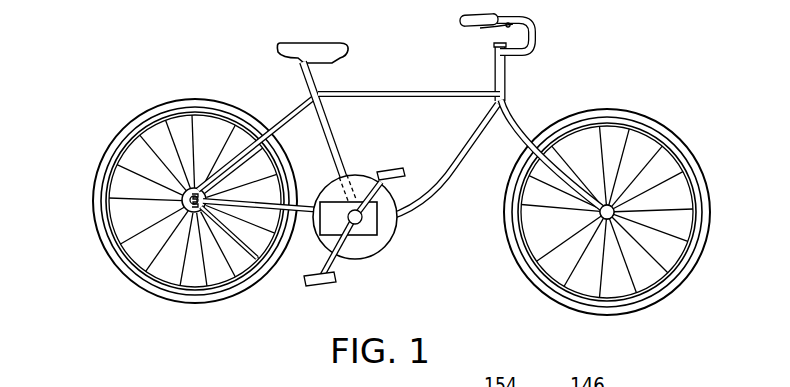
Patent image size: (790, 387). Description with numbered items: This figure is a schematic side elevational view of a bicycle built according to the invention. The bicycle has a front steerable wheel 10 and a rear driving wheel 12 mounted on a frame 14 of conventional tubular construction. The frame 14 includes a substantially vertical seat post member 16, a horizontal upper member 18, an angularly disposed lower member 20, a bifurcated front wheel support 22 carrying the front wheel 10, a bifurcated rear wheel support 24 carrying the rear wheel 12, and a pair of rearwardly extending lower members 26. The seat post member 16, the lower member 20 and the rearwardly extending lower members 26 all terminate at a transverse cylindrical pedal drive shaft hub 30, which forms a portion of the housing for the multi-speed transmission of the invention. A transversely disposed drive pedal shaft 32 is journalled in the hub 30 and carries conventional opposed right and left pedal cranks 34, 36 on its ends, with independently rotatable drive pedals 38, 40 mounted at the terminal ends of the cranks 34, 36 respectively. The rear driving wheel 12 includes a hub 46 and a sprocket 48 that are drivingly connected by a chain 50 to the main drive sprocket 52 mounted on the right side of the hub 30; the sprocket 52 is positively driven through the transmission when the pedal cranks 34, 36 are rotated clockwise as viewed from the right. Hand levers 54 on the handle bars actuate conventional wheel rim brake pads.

The front steerable wheel 10 is at (700, 250).
The rear driving wheel 12 is at (97, 234).
The frame 14 is at (293, 88).
The seat post member 16 is at (331, 100).
The horizontal upper member 18 is at (421, 91).
The angularly disposed lower member 20 is at (454, 168).
The bifurcated front wheel support 22 is at (520, 120).
The bifurcated rear wheel support 24 is at (296, 113).
The rearwardly extending lower members 26 is at (314, 182).
The pedal drive shaft hub 30 is at (320, 242).
The drive pedal shaft 32 is at (382, 222).
The right pedal crank 34 is at (376, 187).
The left pedal crank 36 is at (350, 248).
The drive pedal 38 is at (388, 167).
The drive pedal 40 is at (331, 283).
The hub 46 is at (181, 221).
The sprocket 48 is at (183, 188).
The chain 50 is at (237, 280).
The main drive sprocket 52 is at (393, 237).
The hand levers 54 is at (529, 20).